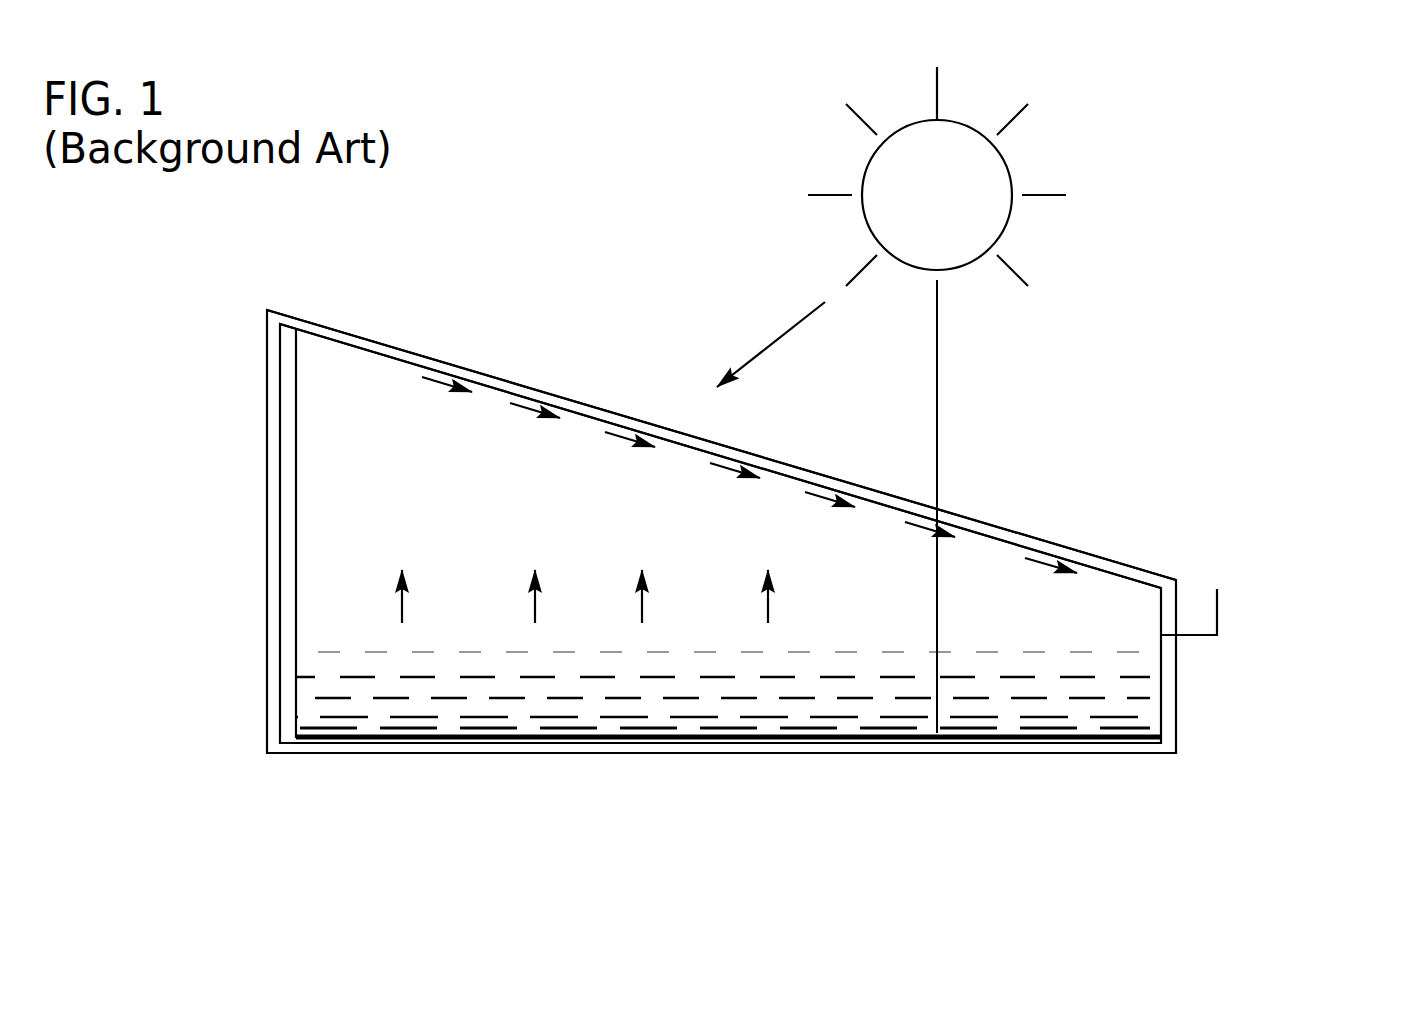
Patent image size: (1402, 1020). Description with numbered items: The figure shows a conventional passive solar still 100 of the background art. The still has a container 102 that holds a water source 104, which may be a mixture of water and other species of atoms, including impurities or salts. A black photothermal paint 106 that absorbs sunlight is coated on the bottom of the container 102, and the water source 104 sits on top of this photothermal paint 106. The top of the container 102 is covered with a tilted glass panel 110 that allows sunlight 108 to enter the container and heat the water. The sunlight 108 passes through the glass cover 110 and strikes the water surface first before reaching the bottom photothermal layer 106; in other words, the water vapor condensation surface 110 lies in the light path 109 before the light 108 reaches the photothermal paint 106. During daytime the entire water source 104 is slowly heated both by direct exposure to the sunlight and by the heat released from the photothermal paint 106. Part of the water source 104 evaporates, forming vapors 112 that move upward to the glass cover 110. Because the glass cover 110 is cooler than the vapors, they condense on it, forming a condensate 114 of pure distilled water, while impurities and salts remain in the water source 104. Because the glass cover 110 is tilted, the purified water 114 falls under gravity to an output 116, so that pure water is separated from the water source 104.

The passive solar still 100 is at (764, 439).
The container 102 is at (267, 393).
The water source 104 is at (592, 676).
The black photothermal paint 106 is at (363, 733).
The sunlight 108 is at (762, 349).
The light path 109 is at (938, 383).
The glass panel 110 is at (990, 505).
The vapors 112 is at (773, 593).
The condensate 114 is at (540, 411).
The output 116 is at (1233, 613).